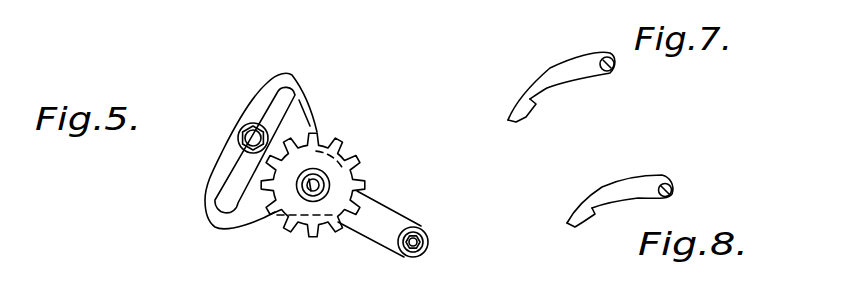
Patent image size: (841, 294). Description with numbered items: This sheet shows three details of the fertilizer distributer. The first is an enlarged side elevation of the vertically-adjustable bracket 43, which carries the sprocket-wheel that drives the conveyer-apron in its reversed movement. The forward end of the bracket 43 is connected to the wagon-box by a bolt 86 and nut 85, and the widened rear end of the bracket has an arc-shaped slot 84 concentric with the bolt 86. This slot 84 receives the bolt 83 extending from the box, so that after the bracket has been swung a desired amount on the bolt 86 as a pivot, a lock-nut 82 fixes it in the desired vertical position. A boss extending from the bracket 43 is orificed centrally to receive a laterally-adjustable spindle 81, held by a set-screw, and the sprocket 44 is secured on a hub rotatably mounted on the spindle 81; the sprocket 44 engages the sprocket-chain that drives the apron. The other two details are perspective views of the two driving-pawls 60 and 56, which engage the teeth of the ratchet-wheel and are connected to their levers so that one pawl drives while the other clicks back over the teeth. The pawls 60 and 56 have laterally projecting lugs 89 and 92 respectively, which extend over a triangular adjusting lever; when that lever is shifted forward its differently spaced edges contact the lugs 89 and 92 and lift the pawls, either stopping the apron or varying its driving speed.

In FIG. 5, the vertically-adjustable bracket 43 is at (301, 122).
In FIG. 5, the sprocket 44 is at (357, 157).
In FIG. 7, the driving-pawl 60 is at (557, 78).
In FIG. 8, the driving-pawl 56 is at (633, 192).
In FIG. 5, the laterally-adjustable spindle 81 is at (314, 185).
In FIG. 5, the lock-nut 82 is at (244, 126).
In FIG. 5, the bolt 83 is at (251, 139).
In FIG. 5, the arc-shaped slot 84 is at (284, 100).
In FIG. 5, the nut 85 is at (421, 231).
In FIG. 5, the bolt 86 is at (425, 241).
In FIG. 7, the laterally projecting lug 89 is at (532, 108).
In FIG. 8, the laterally projecting lug 92 is at (588, 217).